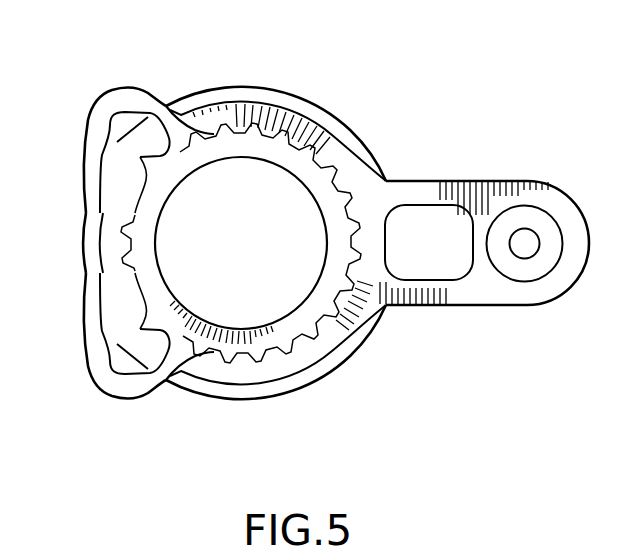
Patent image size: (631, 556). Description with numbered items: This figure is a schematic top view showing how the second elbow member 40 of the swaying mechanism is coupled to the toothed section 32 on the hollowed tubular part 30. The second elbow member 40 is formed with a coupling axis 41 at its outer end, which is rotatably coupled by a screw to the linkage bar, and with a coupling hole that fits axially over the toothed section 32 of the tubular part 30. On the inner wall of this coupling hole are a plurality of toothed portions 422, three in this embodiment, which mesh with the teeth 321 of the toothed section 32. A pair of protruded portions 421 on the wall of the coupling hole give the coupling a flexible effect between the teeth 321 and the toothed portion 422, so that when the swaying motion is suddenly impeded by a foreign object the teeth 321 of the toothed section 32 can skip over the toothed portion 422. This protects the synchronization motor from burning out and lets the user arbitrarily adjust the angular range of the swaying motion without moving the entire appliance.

The hollowed tubular part 30 is at (150, 223).
The toothed section 32 is at (143, 148).
The teeth 321 is at (317, 337).
The second elbow member 40 is at (418, 176).
The coupling axis 41 is at (540, 223).
The protruded portions 421 is at (130, 98).
The toothed portions 422 is at (203, 128).